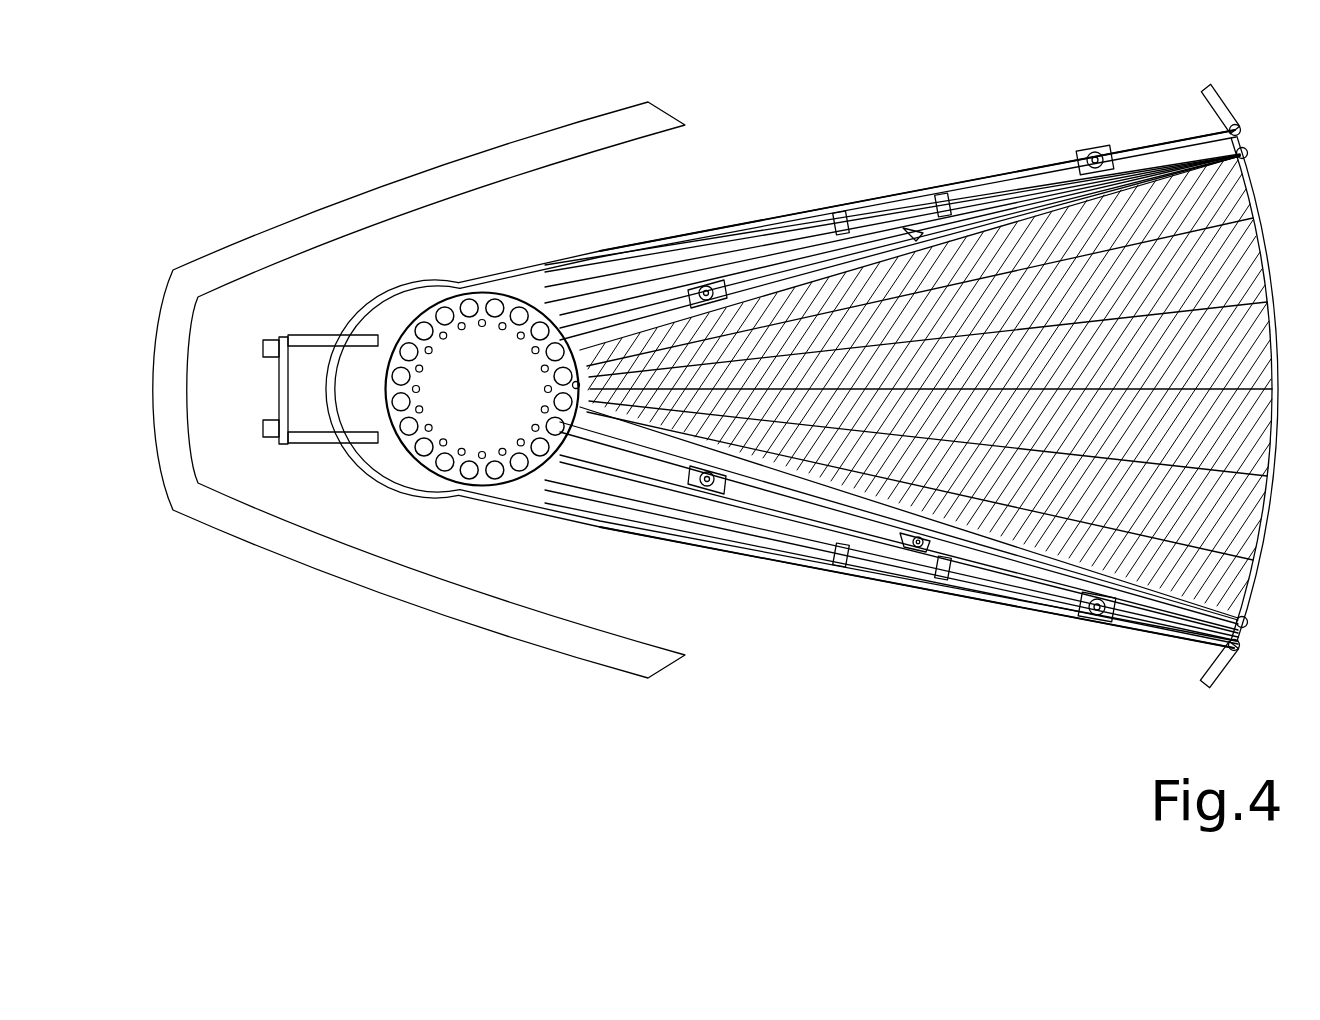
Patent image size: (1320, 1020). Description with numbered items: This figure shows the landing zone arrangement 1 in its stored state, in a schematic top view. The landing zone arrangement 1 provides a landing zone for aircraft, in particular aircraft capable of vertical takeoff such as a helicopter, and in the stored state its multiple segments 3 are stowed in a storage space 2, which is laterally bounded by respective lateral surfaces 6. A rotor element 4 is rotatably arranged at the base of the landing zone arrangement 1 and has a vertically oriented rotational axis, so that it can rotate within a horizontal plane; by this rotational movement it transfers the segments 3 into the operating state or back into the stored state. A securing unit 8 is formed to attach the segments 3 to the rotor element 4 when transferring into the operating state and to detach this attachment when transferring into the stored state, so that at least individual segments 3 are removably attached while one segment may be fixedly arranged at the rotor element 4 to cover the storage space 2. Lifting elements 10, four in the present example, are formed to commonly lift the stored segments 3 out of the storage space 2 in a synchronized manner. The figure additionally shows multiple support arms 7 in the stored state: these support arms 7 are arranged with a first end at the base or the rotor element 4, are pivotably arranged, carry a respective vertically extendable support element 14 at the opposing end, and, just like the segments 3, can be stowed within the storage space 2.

The landing zone arrangement 1 is at (200, 592).
The storage space 2 is at (874, 470).
The segments 3 is at (1038, 493).
The rotor element 4 is at (458, 345).
The lateral surfaces 6 is at (782, 212).
The support arms 7 is at (603, 312).
The securing unit 8 is at (576, 380).
The lifting elements 10 is at (707, 286).
The support element 14 is at (841, 218).